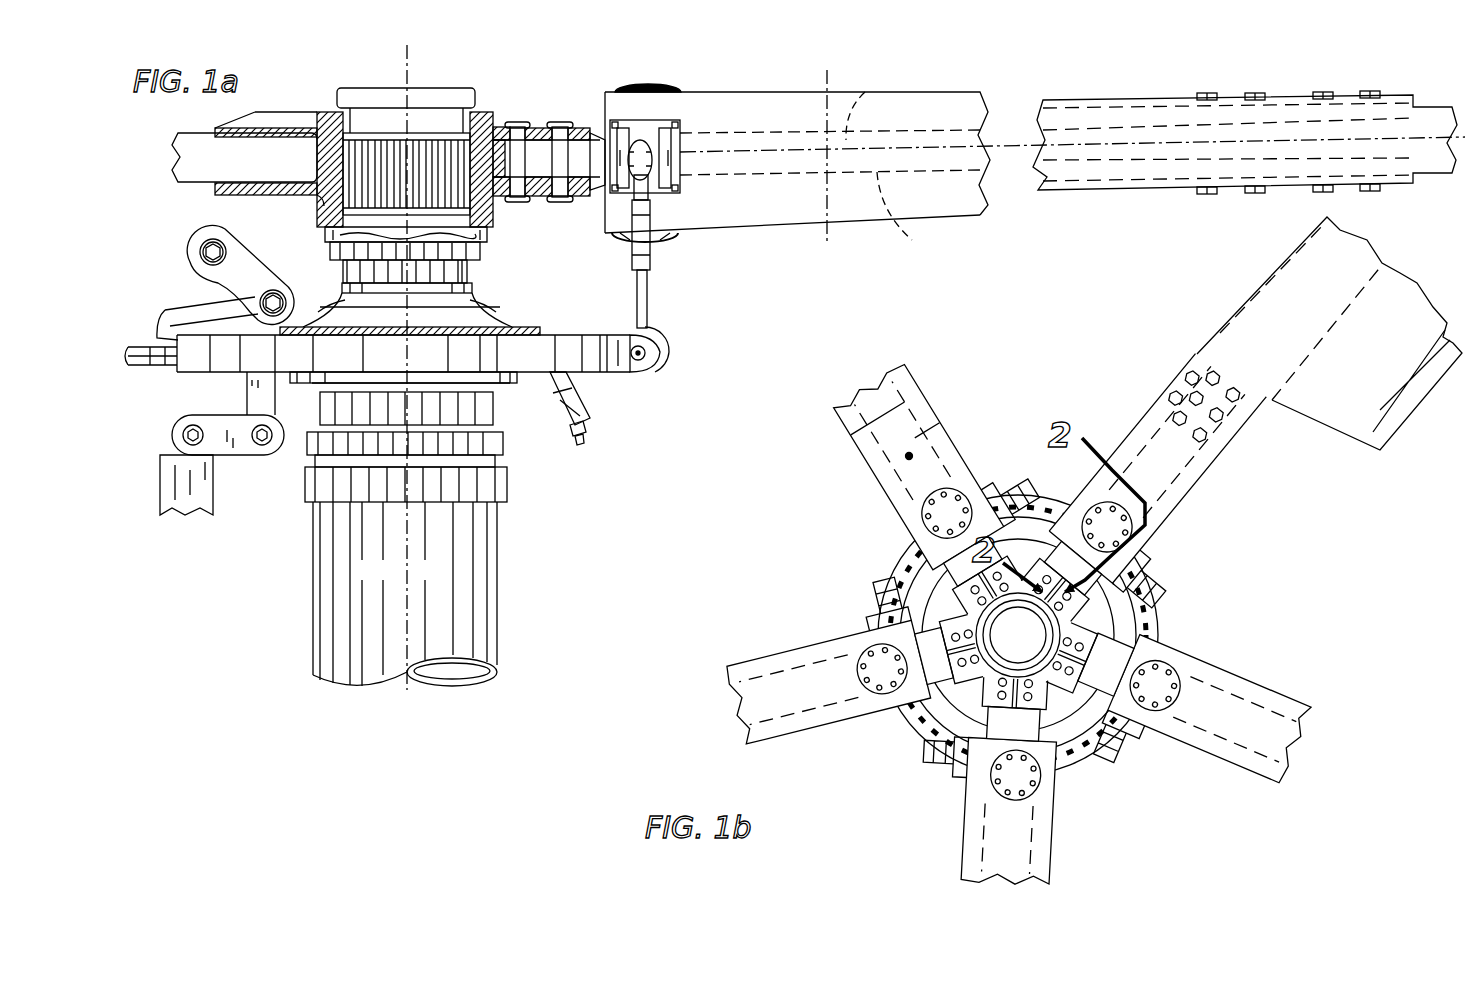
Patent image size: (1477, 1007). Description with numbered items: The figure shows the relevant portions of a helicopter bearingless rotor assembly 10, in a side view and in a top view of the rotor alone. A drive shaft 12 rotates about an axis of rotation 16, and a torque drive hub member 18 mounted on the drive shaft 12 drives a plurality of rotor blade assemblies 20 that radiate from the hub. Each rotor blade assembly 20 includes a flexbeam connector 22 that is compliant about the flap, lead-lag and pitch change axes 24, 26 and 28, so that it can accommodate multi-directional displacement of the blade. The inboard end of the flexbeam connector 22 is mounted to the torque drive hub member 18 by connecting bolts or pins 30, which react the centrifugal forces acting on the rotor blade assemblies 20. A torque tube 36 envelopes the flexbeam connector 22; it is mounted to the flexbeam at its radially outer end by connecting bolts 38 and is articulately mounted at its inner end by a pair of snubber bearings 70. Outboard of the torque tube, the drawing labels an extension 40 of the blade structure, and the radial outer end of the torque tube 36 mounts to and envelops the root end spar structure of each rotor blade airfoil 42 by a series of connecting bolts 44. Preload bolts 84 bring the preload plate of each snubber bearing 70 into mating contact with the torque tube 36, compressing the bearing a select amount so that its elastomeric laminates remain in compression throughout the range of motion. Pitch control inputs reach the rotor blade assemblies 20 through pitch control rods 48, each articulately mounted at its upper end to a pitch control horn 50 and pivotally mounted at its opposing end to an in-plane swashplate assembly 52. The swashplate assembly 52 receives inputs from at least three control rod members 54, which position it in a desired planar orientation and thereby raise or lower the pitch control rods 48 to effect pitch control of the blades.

In FIG. 1a, the helicopter bearingless rotor assembly 10 is at (530, 80).
In FIG. 1a, the drive shaft 12 is at (447, 575).
In FIG. 1a, the axis of rotation 16 is at (412, 49).
In FIG. 1a, the torque drive hub member 18 is at (588, 200).
In FIG. 1a, the rotor blade assembly 20 is at (962, 82).
In FIG. 1b, the rotor blade assembly 20 is at (1000, 378).
In FIG. 1a, the flexbeam connector 22 is at (903, 219).
In FIG. 1b, the flexbeam connector 22 is at (960, 418).
In FIG. 1a, the flap axis 24 is at (642, 142).
In FIG. 1b, the flap axis 24 is at (895, 548).
In FIG. 1a, the lead-lag axis 26 is at (830, 244).
In FIG. 1b, the lead-lag axis 26 is at (906, 456).
In FIG. 1a, the pitch change axis 28 is at (838, 108).
In FIG. 1b, the pitch change axis 28 is at (840, 443).
In FIG. 1a, the connecting bolts or pins 30 is at (515, 125).
In FIG. 1b, the connecting bolts or pins 30 is at (1045, 548).
In FIG. 1a, the torque tube 36 is at (789, 230).
In FIG. 1b, the torque tube 36 is at (906, 378).
In FIG. 1a, the connecting bolts 38 is at (1252, 92).
In FIG. 1b, the connecting bolts 38 is at (1178, 428).
In FIG. 1a, the extension arm 40 is at (1430, 100).
In FIG. 1b, the extension arm 40 is at (1240, 365).
In FIG. 1b, the rotor blade airfoil 42 is at (1380, 353).
In FIG. 1a, the connecting bolts 44 is at (1367, 91).
In FIG. 1b, the connecting bolts 44 is at (1247, 420).
In FIG. 1a, the pitch control rod 48 is at (652, 302).
In FIG. 1a, the pitch control horn 50 is at (618, 215).
In FIG. 1b, the pitch control horn 50 is at (1172, 562).
In FIG. 1a, the in-plane swashplate assembly 52 is at (624, 386).
In FIG. 1a, the control rod member 54 is at (566, 428).
In FIG. 1a, the snubber bearing 70 is at (660, 88).
In FIG. 1b, the snubber bearing 70 is at (1132, 523).
In FIG. 1a, the preload bolts 84 is at (608, 86).